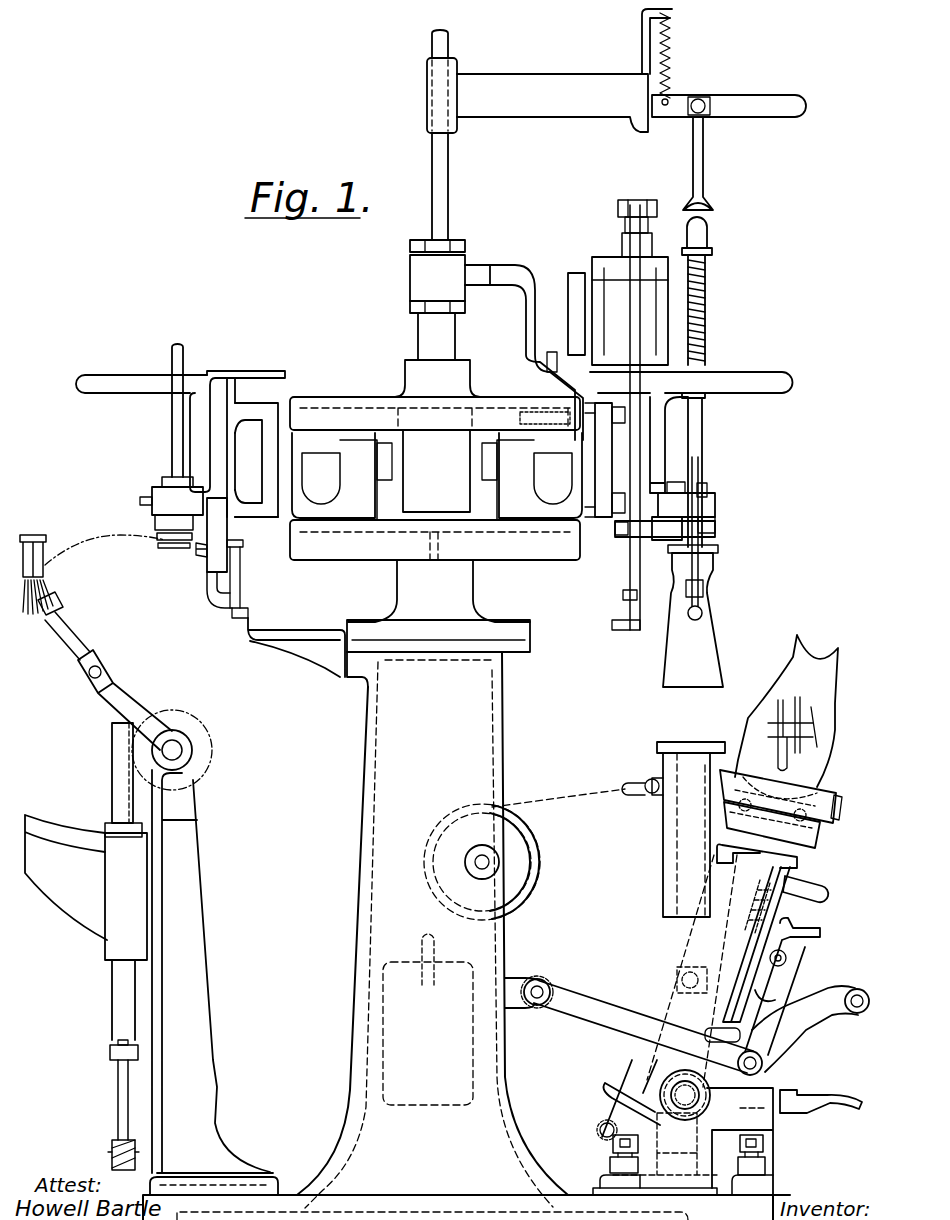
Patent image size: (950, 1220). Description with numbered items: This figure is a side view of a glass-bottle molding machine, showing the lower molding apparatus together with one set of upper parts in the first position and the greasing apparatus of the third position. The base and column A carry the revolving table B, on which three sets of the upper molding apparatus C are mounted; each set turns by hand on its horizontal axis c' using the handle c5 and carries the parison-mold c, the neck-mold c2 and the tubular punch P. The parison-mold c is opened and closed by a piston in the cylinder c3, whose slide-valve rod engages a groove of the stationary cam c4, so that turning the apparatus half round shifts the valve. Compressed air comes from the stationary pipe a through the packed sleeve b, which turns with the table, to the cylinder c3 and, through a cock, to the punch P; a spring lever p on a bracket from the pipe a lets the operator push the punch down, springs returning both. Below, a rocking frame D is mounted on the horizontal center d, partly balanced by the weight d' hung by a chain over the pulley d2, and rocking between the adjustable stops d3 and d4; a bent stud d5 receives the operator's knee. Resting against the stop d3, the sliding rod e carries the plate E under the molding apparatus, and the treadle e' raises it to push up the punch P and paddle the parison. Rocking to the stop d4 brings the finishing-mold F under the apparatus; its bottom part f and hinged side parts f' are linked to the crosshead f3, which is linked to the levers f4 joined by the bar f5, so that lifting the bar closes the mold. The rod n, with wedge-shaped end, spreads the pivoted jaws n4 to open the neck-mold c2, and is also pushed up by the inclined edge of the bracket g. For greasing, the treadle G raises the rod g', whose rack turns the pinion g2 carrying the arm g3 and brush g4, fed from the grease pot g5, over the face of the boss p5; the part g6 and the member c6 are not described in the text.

The stationary pipe a is at (549, 124).
The packed sleeve b is at (489, 340).
The spring lever p is at (729, 218).
The revolving table B is at (435, 509).
The horizontal axis c' is at (437, 476).
The base and column A is at (445, 1163).
The weight d' is at (428, 1019).
The pulley d2 is at (524, 854).
The plate or table E is at (673, 818).
The finishing-mold F is at (822, 760).
The side part of finishing-mold f' is at (792, 720).
The bottom part of finishing-mold f is at (751, 942).
The bent stud d5 is at (810, 882).
The rocking frame D is at (667, 997).
The sliding rod e is at (669, 937).
The levers f4 is at (633, 1025).
The crosshead f3 is at (790, 983).
The bar f5 is at (810, 1018).
The treadle e' is at (821, 1089).
The horizontal center d is at (683, 1145).
The adjustable stop d3 is at (762, 1165).
The adjustable stop d4 is at (611, 1161).
The cylinder c3 is at (618, 282).
The handle c5 is at (434, 432).
The stationary eccentric or cam c4 is at (461, 457).
The tubular punch P is at (696, 420).
The rod n is at (423, 417).
The pivoted jaws n4 is at (195, 562).
The upper molding apparatus C is at (697, 499).
The neck-mold c2 is at (716, 526).
The rod c6 is at (700, 568).
The parison-mold c is at (693, 620).
The boss p5 is at (177, 530).
The bracket g is at (296, 647).
The grease pot g5 is at (92, 556).
The brush g4 is at (44, 597).
The arm g3 is at (108, 681).
The pinion g2 is at (182, 750).
The rod g' is at (178, 959).
The bracket g6 is at (86, 878).
The treadle G is at (112, 1154).